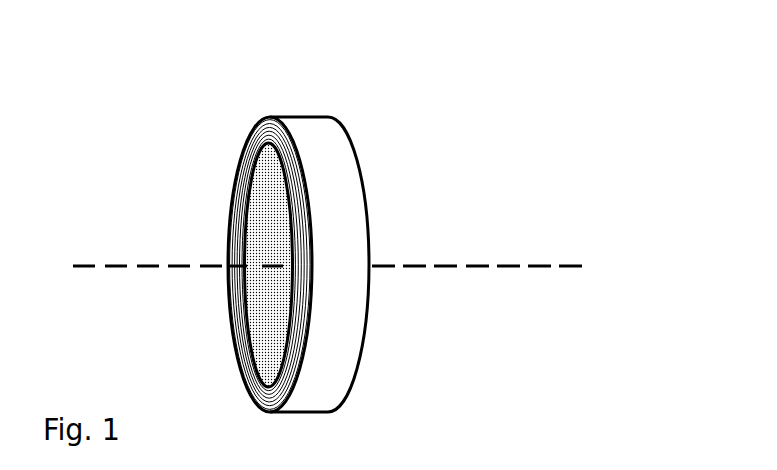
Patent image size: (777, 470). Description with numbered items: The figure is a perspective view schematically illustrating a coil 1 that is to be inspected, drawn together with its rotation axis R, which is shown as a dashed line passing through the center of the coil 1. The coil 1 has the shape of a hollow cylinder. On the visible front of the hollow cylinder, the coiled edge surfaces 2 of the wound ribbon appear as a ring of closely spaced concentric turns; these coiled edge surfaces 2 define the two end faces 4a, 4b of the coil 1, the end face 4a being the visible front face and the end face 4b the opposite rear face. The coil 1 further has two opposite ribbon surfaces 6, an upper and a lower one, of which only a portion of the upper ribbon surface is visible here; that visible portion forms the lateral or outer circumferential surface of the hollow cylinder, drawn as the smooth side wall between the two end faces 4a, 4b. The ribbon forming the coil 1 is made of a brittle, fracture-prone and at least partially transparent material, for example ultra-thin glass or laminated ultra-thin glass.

The coil 1 is at (521, 72).
The coiled edge surfaces 2 is at (257, 128).
The end face 4a is at (227, 231).
The end face 4b is at (373, 240).
The ribbon surfaces 6 is at (335, 147).
The rotation axis R is at (567, 266).